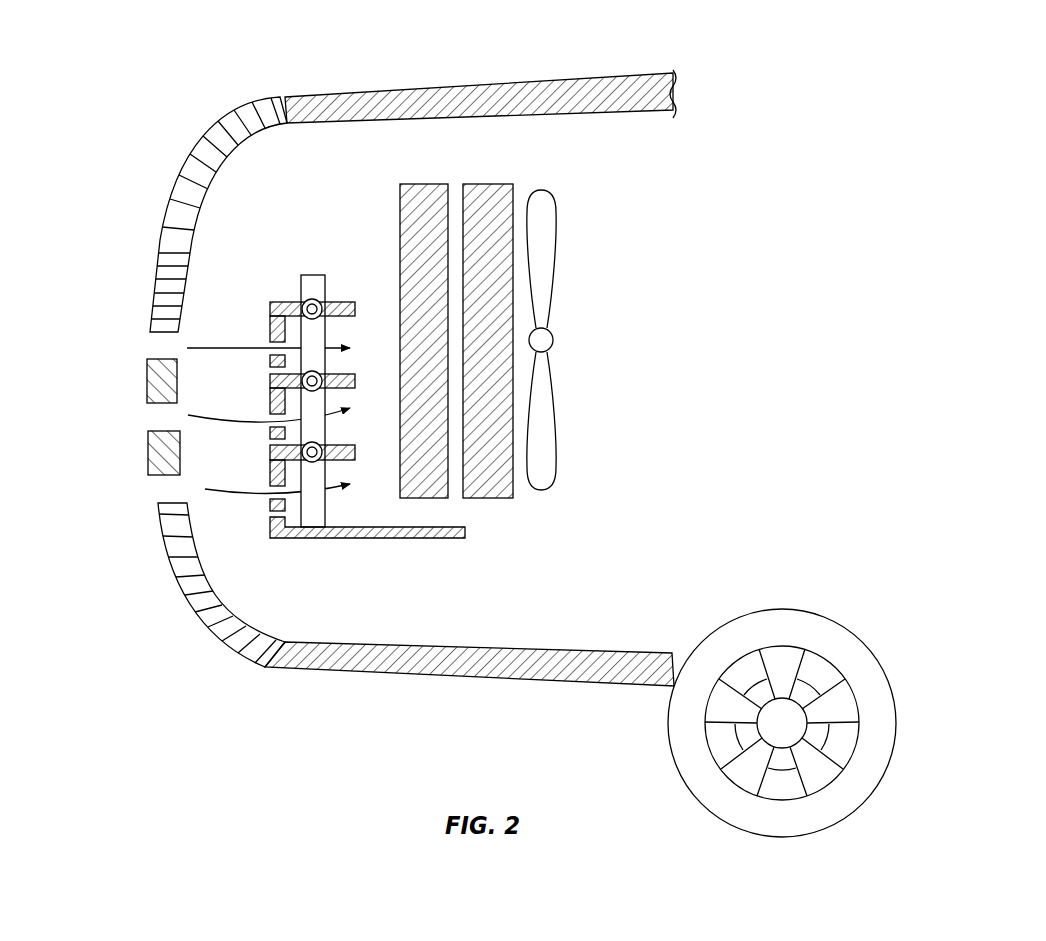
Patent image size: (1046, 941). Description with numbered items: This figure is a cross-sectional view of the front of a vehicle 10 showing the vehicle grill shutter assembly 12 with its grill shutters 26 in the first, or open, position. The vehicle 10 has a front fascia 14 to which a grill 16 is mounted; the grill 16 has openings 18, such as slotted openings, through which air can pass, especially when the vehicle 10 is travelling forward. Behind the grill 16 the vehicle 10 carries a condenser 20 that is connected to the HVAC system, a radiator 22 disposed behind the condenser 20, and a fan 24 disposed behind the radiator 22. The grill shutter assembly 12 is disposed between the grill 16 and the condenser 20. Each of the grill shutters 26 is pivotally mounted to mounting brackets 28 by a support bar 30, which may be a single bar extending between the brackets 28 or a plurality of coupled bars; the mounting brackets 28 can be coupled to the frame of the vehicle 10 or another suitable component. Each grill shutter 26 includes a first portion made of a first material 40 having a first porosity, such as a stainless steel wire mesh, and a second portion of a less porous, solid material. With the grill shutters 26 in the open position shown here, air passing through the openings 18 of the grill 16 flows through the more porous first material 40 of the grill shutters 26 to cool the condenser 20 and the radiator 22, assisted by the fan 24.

The vehicle 10 is at (220, 42).
The vehicle grill shutter assembly 12 is at (270, 268).
The front fascia 14 is at (165, 231).
The grill 16 is at (78, 337).
The openings 18 is at (157, 347).
The condenser 20 is at (418, 184).
The radiator 22 is at (487, 184).
The fan 24 is at (553, 232).
The grill shutters 26 is at (338, 303).
The mounting brackets 28 is at (318, 275).
The support bar 30 is at (318, 311).
The first material 40 is at (270, 333).